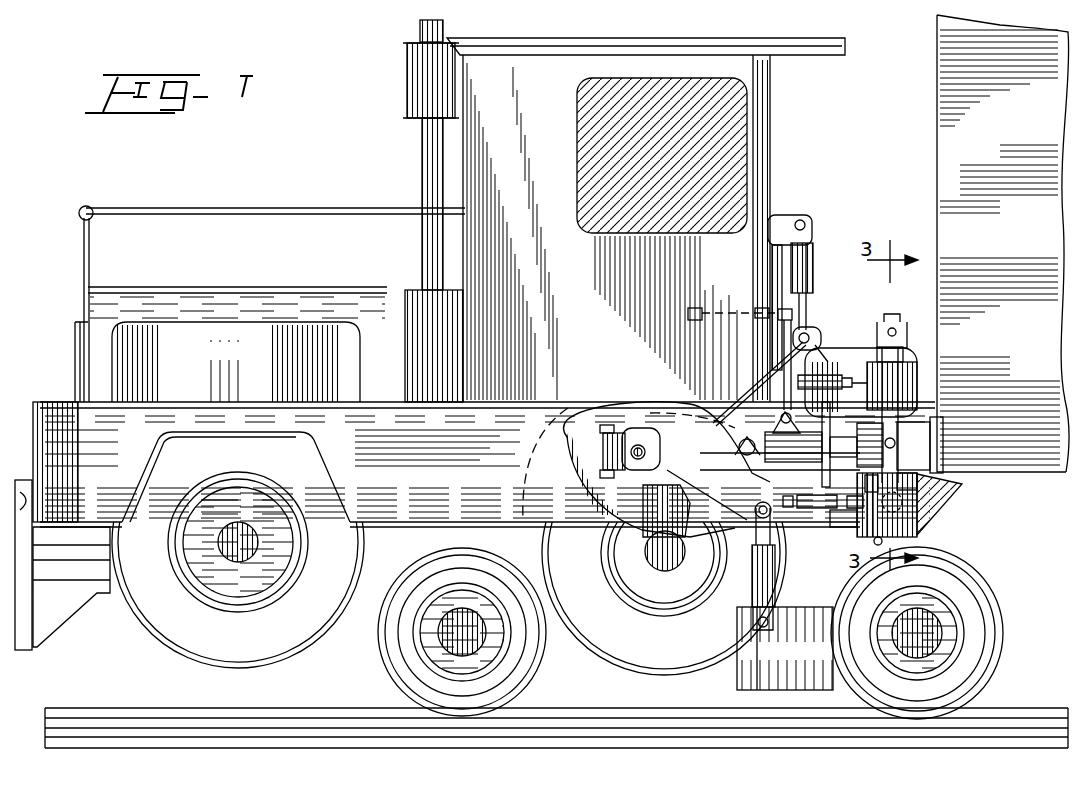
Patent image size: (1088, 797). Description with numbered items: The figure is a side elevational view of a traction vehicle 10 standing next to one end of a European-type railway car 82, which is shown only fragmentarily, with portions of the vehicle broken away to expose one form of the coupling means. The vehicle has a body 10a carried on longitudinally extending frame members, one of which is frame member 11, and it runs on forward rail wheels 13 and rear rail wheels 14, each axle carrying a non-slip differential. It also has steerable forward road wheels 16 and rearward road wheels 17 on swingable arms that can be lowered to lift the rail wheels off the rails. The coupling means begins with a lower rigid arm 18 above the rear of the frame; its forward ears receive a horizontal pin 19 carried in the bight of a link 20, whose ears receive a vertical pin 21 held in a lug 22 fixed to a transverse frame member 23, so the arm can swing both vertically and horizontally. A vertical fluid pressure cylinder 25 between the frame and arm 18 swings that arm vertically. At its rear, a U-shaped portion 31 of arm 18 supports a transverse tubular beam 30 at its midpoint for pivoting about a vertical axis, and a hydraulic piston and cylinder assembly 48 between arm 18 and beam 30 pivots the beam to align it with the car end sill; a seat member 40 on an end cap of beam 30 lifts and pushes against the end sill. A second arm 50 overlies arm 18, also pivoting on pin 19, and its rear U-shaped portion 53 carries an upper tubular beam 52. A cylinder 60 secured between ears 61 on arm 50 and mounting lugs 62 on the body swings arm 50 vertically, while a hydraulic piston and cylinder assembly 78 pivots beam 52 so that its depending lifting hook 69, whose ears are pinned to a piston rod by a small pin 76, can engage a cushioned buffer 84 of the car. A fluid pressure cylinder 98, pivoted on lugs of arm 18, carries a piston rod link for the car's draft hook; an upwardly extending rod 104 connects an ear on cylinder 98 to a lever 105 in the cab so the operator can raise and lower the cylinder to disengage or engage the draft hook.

The traction vehicle 10 is at (240, 205).
The body 10a is at (495, 360).
The frame member 11 is at (752, 667).
The rail wheels 13 is at (420, 668).
The rail wheels 14 is at (972, 660).
The forward road wheels 16 is at (188, 637).
The rearward road wheels 17 is at (618, 638).
The lower rigid arm 18 is at (833, 520).
The pin 19 is at (633, 458).
The link 20 is at (632, 430).
The vertical pin 21 is at (598, 413).
The lug 22 is at (598, 452).
The transversely extending member 23 is at (575, 459).
The fluid pressure operated cylinder 25 is at (760, 572).
The tubular beam 30 is at (920, 527).
The U-shaped portion 31 is at (882, 541).
The seat member 40 is at (935, 490).
The hydraulic piston and cylinder assembly 48 is at (817, 508).
The second arm 50 is at (747, 410).
The tubular beam 52 is at (918, 373).
The U-shaped portion 53 is at (865, 345).
The fluid pressure operated cylinder 60 is at (810, 258).
The spaced-apart ears 61 is at (820, 336).
The mounting lugs 62 is at (783, 216).
The lifting hook 69 is at (920, 420).
The small pin 76 is at (909, 335).
The hydraulic piston and cylinder assembly 78 is at (822, 378).
The European-type railway car 82 is at (930, 168).
The cushioned buffer 84 is at (808, 411).
The fluid pressure operated cylinder 98 is at (783, 480).
The rod 104 is at (778, 357).
The lever 105 is at (723, 307).